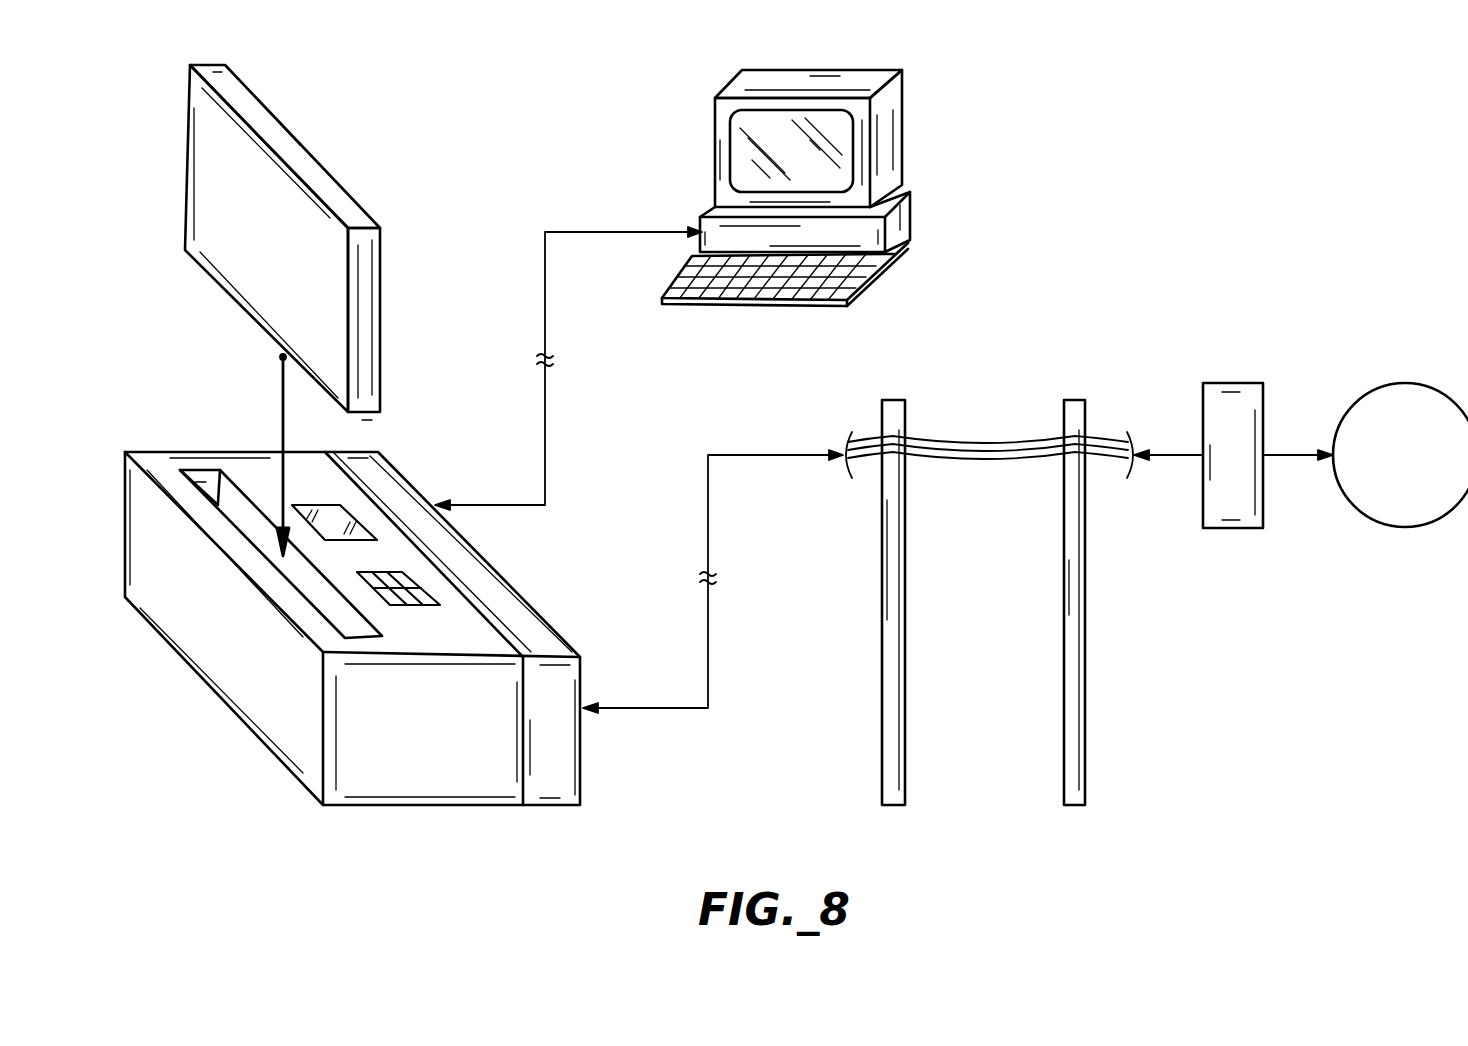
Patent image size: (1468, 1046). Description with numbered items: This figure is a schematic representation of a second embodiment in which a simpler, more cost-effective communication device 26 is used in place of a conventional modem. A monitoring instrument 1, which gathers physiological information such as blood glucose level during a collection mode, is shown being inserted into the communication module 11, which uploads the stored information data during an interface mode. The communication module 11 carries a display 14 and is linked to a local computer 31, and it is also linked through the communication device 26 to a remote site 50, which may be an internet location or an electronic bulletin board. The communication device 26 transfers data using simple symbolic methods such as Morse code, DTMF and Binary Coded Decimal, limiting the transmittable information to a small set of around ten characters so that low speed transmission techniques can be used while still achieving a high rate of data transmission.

The monitoring instrument 1 is at (343, 188).
The communication module 11 is at (257, 735).
The display 14 is at (348, 508).
The communication device 26 is at (542, 610).
The local computer 31 is at (900, 143).
The remote site 50 is at (1387, 385).